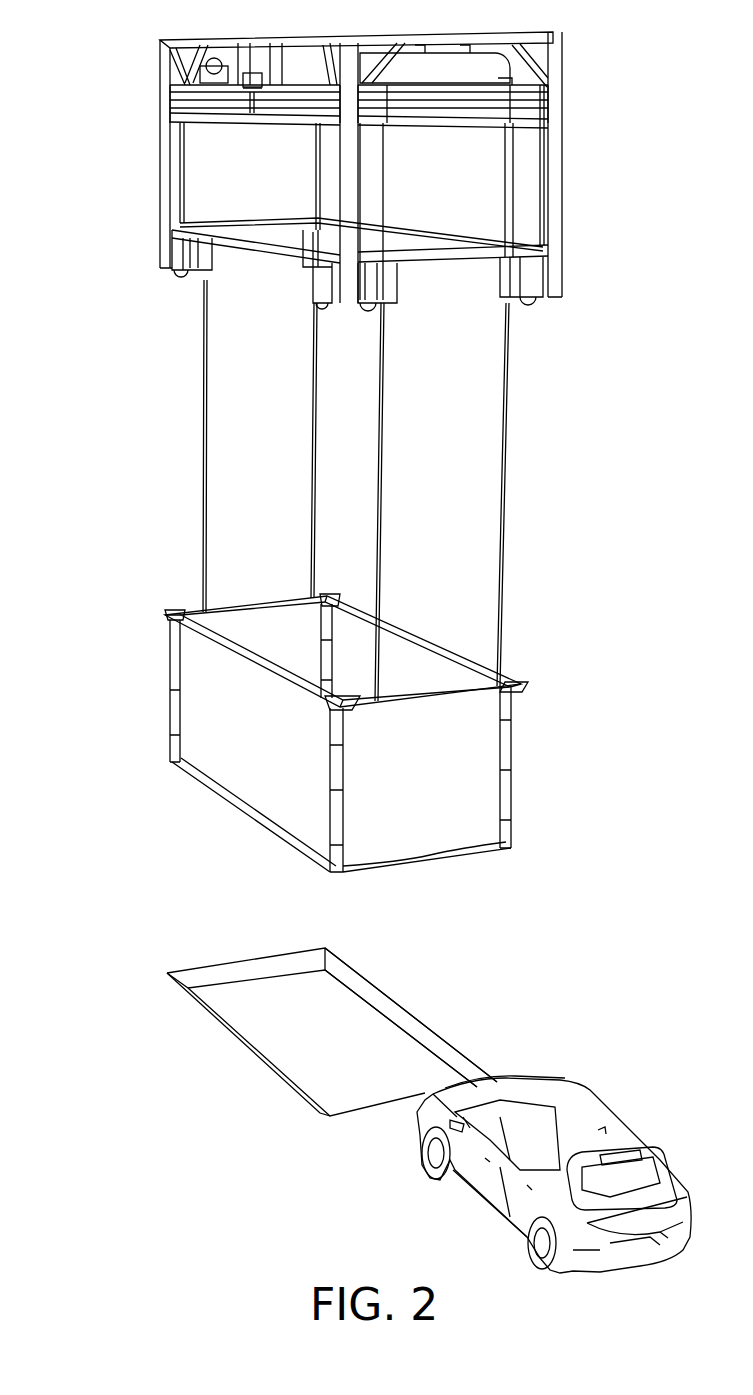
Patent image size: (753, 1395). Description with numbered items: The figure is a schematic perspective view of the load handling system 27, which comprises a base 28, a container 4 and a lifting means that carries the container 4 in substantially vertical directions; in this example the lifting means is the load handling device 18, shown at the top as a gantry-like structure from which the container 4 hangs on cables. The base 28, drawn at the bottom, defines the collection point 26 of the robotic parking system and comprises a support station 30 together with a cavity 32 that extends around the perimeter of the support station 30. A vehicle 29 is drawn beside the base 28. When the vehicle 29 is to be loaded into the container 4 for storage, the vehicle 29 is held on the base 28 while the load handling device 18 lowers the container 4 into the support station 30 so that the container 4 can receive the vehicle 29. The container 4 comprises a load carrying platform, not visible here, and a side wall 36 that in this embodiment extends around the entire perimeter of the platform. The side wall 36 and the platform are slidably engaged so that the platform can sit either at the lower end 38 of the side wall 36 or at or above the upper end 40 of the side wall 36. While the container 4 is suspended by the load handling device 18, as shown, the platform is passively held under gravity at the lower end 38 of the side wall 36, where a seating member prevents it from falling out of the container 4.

The load handling device 18 is at (577, 177).
The load handling system 27 is at (99, 275).
The upper end of the side wall 40 is at (364, 733).
The side wall 36 is at (184, 722).
The lower end of the side wall 38 is at (184, 780).
The container 4 is at (487, 803).
The collection point 26 is at (322, 1005).
The base 28 is at (205, 1105).
The support station 30 is at (335, 1048).
The cavity 32 is at (413, 1022).
The vehicle 29 is at (604, 1103).